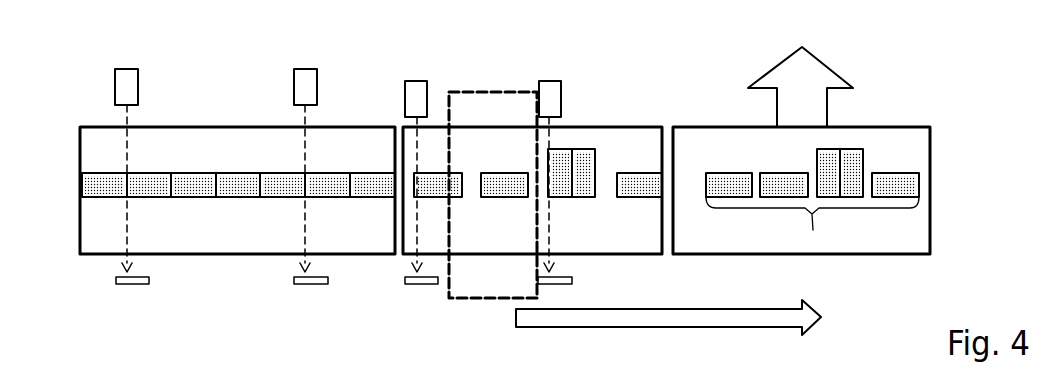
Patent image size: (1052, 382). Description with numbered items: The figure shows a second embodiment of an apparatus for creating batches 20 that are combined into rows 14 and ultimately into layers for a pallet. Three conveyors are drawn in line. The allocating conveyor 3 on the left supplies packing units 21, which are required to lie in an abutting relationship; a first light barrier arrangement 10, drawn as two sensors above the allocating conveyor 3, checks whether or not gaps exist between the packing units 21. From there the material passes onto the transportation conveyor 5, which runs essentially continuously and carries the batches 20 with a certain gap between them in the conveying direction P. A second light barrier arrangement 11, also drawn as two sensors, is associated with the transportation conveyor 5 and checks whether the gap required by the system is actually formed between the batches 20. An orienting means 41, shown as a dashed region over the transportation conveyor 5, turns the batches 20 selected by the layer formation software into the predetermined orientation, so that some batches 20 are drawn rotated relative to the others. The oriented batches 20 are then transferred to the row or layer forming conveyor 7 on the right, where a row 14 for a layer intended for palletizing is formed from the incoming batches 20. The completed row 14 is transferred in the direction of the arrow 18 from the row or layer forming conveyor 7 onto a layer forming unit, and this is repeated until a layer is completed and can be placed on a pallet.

The allocating conveyor 3 is at (197, 255).
The transportation conveyor 5 is at (607, 127).
The row or layer forming conveyor 7 is at (855, 254).
The first light barrier arrangement 10 is at (130, 71).
The second light barrier arrangement 11 is at (418, 81).
The row 14 is at (863, 208).
The arrow 18 is at (818, 109).
The batch 20 is at (630, 187).
The packing unit 21 is at (235, 173).
The orienting means 41 is at (462, 92).
The conveying direction P is at (665, 317).